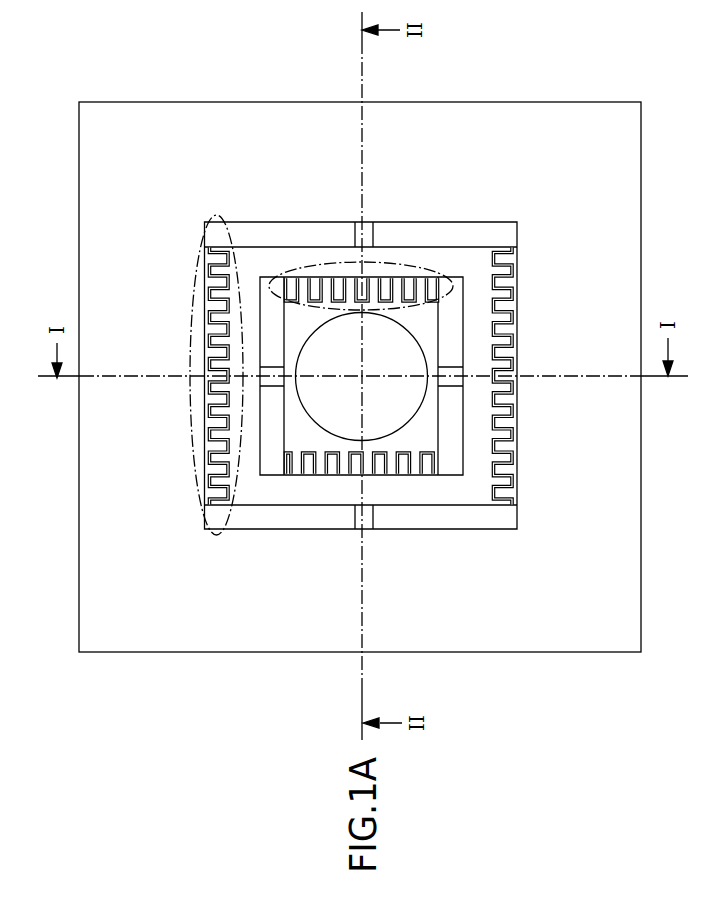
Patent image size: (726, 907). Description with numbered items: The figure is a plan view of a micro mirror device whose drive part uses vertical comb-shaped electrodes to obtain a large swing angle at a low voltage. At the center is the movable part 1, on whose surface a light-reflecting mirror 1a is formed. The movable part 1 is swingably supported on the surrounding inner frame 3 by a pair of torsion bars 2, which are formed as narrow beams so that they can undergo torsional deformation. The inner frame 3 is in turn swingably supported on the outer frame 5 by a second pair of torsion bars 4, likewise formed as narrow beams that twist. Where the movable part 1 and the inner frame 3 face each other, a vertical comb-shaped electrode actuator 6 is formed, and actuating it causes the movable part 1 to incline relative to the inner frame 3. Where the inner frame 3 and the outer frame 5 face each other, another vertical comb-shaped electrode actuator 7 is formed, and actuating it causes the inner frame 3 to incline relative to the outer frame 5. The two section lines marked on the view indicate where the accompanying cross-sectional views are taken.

The movable part 1 is at (298, 430).
The mirror 1a is at (332, 412).
The torsion bars 2 is at (265, 362).
The inner frame 3 is at (284, 262).
The torsion bars 4 is at (372, 234).
The outer frame 5 is at (335, 140).
The vertical comb-shaped electrode actuator 6 is at (422, 265).
The vertical comb-shaped electrode actuator 7 is at (200, 250).